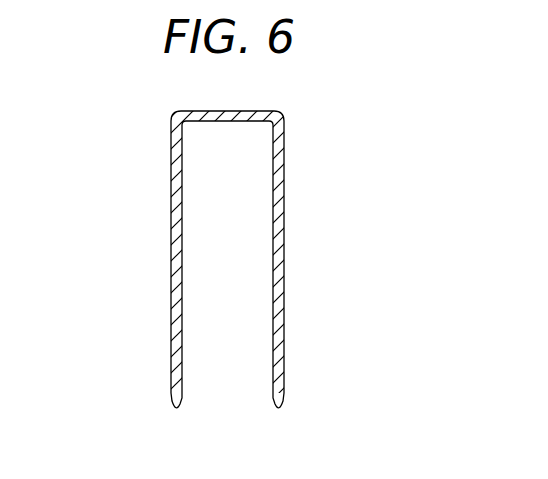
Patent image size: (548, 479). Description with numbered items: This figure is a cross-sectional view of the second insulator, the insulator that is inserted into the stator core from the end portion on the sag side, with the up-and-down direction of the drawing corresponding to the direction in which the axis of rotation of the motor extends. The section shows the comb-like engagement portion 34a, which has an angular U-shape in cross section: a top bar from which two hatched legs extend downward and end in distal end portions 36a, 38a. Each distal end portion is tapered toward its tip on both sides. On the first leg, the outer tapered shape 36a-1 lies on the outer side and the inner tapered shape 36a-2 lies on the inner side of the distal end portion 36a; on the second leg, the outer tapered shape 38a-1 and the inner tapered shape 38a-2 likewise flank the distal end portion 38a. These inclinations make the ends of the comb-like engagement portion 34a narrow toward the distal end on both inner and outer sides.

The comb-like engagement portion 34a is at (326, 165).
The distal end portion 36a is at (167, 287).
The distal end portion 38a is at (291, 294).
The outer tapered shape 36a-1 is at (172, 398).
The inner tapered shape 36a-2 is at (180, 405).
The outer tapered shape 38a-1 is at (283, 398).
The inner tapered shape 38a-2 is at (275, 405).